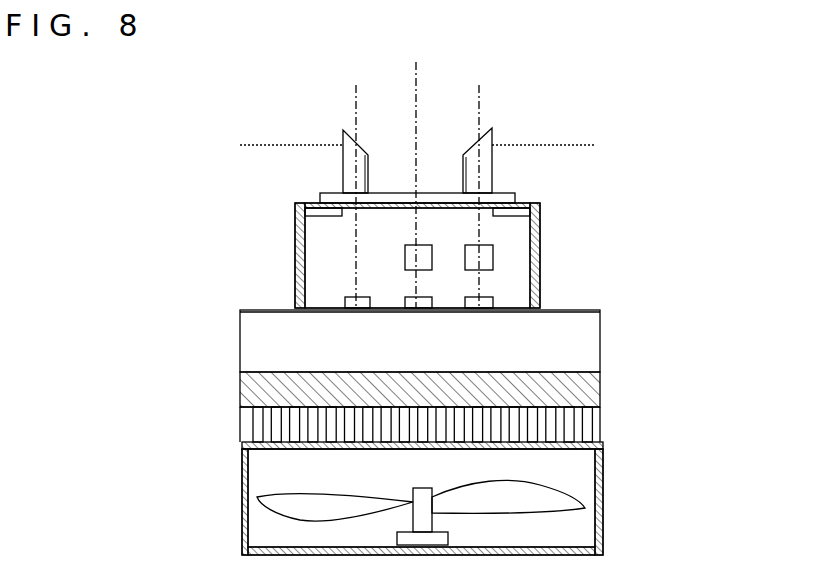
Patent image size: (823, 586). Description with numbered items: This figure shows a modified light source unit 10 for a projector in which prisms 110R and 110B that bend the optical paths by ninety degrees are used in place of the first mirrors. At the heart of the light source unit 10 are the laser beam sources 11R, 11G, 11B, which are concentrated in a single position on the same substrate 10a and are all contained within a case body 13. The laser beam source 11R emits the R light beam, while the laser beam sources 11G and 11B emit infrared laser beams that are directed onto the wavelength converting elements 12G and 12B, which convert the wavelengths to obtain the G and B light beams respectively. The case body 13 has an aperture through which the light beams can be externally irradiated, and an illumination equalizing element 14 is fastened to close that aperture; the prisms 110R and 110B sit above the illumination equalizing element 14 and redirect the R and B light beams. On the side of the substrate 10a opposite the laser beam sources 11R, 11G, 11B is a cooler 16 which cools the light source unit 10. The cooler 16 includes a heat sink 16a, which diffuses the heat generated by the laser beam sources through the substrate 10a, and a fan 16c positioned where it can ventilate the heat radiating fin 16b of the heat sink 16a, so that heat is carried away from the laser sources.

The light source unit 10 is at (472, 255).
The substrate 10a is at (600, 327).
The laser beam source 11R is at (345, 300).
The laser beam source 11G is at (405, 303).
The laser beam source 11B is at (493, 299).
The wavelength converting element 12G is at (405, 251).
The wavelength converting element 12B is at (465, 251).
The case body 13 is at (540, 247).
The illumination equalizing element 14 is at (515, 195).
The cooler 16 is at (456, 463).
The heat sink 16a is at (428, 410).
The heat radiating fin 16b is at (256, 413).
The fan 16c is at (603, 528).
The prism 110R is at (366, 148).
The prism 110B is at (468, 150).